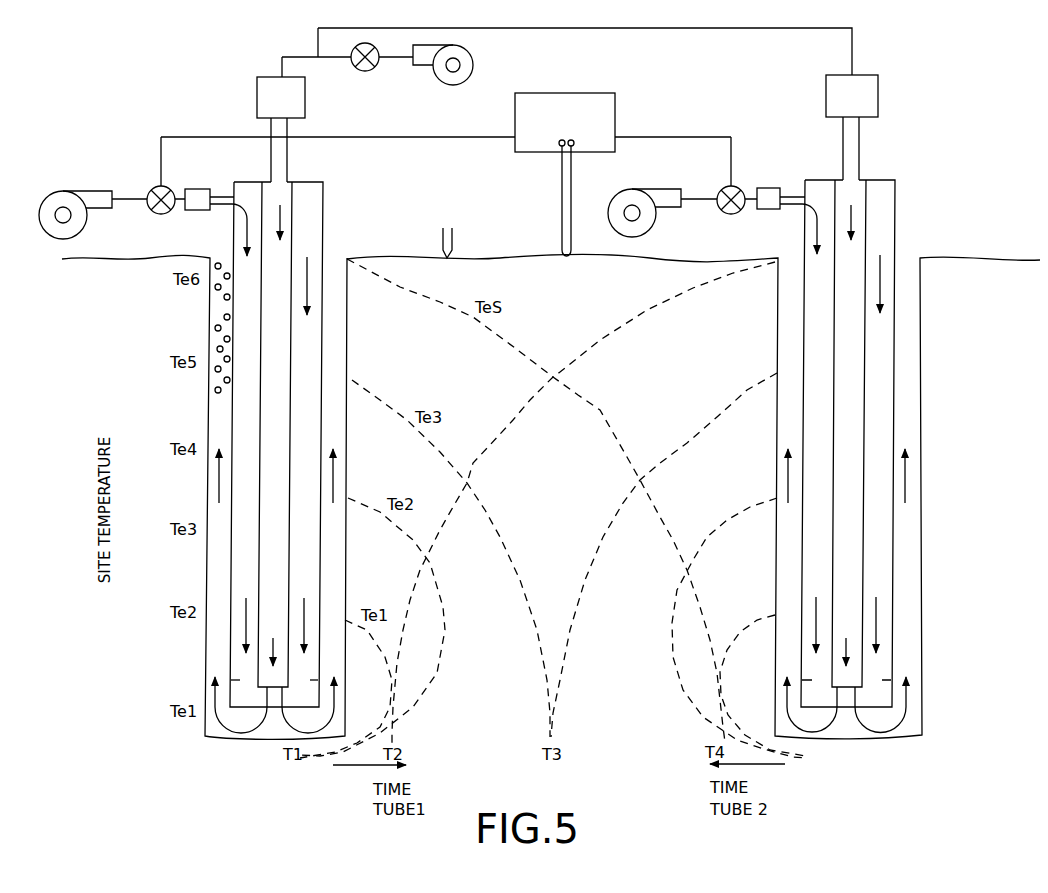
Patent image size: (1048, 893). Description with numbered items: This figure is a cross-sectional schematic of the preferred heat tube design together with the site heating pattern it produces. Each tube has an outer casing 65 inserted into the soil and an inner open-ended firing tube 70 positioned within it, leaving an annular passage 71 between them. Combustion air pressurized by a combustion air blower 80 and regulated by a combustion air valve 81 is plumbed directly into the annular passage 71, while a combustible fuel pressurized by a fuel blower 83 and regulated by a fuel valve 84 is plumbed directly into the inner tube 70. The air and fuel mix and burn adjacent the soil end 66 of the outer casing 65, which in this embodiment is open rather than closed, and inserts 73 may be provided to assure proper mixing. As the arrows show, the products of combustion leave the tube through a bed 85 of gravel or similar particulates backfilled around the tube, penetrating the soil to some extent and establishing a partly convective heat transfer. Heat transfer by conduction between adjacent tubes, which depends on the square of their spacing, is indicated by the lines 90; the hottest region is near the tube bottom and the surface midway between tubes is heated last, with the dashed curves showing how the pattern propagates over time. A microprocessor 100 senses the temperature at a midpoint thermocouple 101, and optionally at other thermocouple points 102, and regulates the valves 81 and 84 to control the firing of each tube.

The outer casing 65 is at (228, 645).
The soil end of outer casing 66 is at (241, 710).
The inner firing tube 70 is at (273, 403).
The annular passage 71 is at (246, 307).
The insert 73 is at (308, 682).
The combustion air blower 80 is at (67, 213).
The combustion air valve 81 is at (162, 214).
The fuel blower 83 is at (435, 85).
The fuel valve 84 is at (362, 72).
The gravel bed 85 is at (215, 339).
The heat transfer lines 90 is at (507, 536).
The microprocessor 100 is at (565, 122).
The midpoint thermocouple 101 is at (559, 247).
The other thermocouple points 102 is at (440, 247).